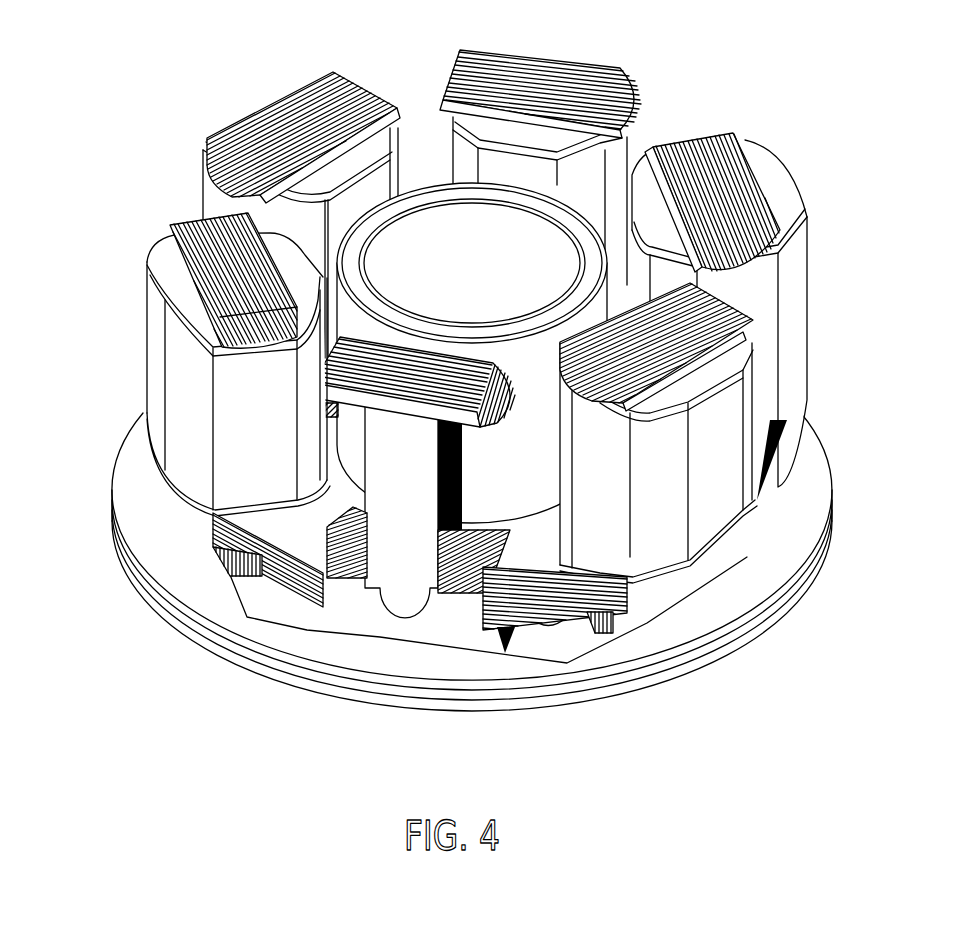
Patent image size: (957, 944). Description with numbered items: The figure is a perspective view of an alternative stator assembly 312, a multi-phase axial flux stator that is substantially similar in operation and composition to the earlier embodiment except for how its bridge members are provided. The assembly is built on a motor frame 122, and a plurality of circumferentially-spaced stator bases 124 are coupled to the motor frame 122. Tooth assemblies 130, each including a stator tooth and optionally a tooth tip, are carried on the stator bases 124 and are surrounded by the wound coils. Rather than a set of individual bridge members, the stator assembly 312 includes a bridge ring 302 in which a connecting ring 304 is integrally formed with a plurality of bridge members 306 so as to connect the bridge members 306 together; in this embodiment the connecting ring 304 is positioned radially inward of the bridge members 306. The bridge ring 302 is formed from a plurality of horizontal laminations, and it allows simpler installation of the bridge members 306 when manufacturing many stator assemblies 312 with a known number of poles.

The stator assembly 312 is at (504, 404).
The motor frame 122 is at (808, 472).
The stator base 124 is at (356, 608).
The tooth assembly 130 is at (423, 517).
The bridge ring 302 is at (255, 530).
The connecting ring 304 is at (497, 520).
The bridge member 306 is at (417, 611).